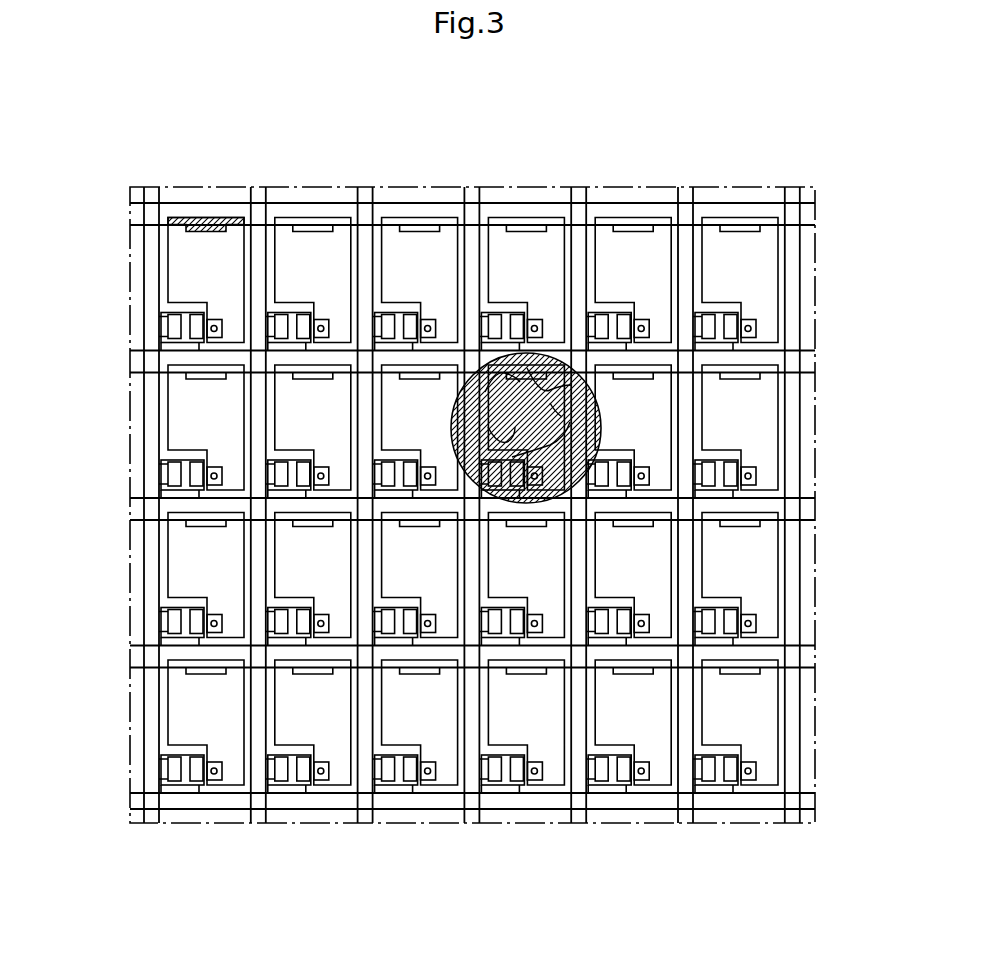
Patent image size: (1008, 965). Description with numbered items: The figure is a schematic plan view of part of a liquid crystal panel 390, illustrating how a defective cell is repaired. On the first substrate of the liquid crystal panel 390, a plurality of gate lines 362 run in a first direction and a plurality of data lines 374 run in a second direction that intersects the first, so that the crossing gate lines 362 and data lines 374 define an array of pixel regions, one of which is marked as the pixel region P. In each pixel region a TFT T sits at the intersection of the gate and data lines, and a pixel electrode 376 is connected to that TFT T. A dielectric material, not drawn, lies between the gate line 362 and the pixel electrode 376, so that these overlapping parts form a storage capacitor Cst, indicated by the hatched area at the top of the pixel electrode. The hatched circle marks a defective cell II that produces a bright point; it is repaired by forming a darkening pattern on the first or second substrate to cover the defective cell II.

The liquid crystal panel 390 is at (685, 180).
The gate lines 362 is at (135, 365).
The data lines 374 is at (152, 315).
The pixel electrode 376 is at (175, 263).
The pixel region P is at (250, 228).
The storage capacitor Cst is at (207, 217).
The TFT T is at (207, 317).
The defective cell II is at (570, 364).